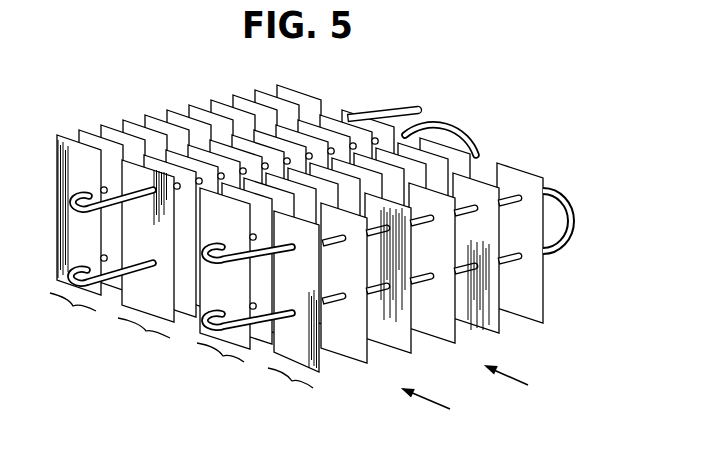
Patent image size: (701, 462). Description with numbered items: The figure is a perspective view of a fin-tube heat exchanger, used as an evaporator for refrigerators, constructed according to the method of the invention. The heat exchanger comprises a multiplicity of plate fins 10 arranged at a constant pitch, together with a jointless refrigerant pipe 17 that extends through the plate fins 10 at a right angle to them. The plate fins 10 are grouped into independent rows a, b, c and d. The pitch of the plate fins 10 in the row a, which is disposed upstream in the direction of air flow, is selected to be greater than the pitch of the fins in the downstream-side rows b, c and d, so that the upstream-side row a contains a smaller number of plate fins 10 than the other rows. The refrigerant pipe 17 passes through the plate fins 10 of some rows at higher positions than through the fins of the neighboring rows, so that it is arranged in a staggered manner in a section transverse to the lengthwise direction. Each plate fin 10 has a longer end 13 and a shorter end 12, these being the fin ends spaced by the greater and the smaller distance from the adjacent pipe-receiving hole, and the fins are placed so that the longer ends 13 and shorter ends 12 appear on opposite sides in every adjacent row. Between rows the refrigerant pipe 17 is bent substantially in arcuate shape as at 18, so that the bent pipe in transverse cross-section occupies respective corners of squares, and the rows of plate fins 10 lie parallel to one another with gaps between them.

The plate fin 10 is at (534, 308).
The shorter end 12 is at (212, 331).
The longer end 13 is at (188, 253).
The refrigerant pipe 17 is at (571, 188).
The arcuate bend 18 is at (441, 132).
The upstream-side fin row a is at (290, 385).
The downstream-side fin row b is at (220, 365).
The downstream-side fin row c is at (144, 335).
The downstream-side fin row d is at (73, 314).